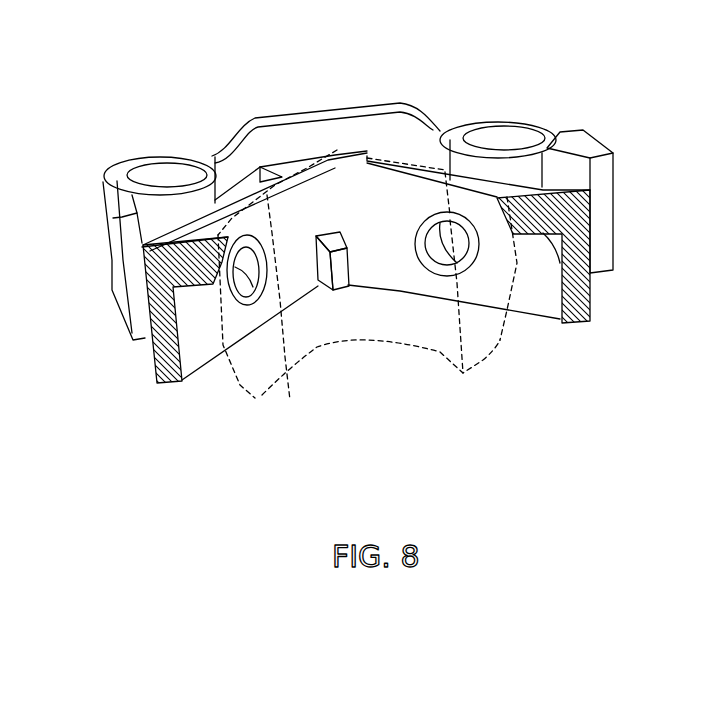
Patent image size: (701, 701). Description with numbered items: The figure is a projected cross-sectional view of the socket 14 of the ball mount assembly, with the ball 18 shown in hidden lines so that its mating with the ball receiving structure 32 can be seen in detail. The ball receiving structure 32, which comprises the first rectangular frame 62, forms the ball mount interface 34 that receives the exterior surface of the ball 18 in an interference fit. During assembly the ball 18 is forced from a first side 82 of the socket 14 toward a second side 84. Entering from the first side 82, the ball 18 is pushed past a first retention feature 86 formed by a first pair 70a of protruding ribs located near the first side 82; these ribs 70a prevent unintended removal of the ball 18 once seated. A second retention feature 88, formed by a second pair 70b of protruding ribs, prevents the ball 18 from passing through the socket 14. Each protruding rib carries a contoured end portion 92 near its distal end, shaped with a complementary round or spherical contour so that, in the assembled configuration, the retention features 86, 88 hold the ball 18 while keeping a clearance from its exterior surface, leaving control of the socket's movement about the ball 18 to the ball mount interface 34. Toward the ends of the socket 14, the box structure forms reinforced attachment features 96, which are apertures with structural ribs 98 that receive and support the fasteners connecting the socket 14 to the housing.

The socket 14 is at (117, 97).
The ball 18 is at (337, 148).
The ball receiving structure 32 is at (377, 213).
The first rectangular frame 62 is at (420, 197).
The ball mount interface 34 is at (259, 273).
The first pair of protruding ribs 70a is at (316, 232).
The second pair of protruding ribs 70b is at (231, 267).
The first side 82 is at (218, 362).
The second side 84 is at (209, 151).
The first retention feature 86 is at (353, 270).
The second retention feature 88 is at (401, 324).
The contoured end portion 92 is at (280, 272).
The reinforced attachment features 96 is at (527, 138).
The structural ribs 98 is at (119, 169).